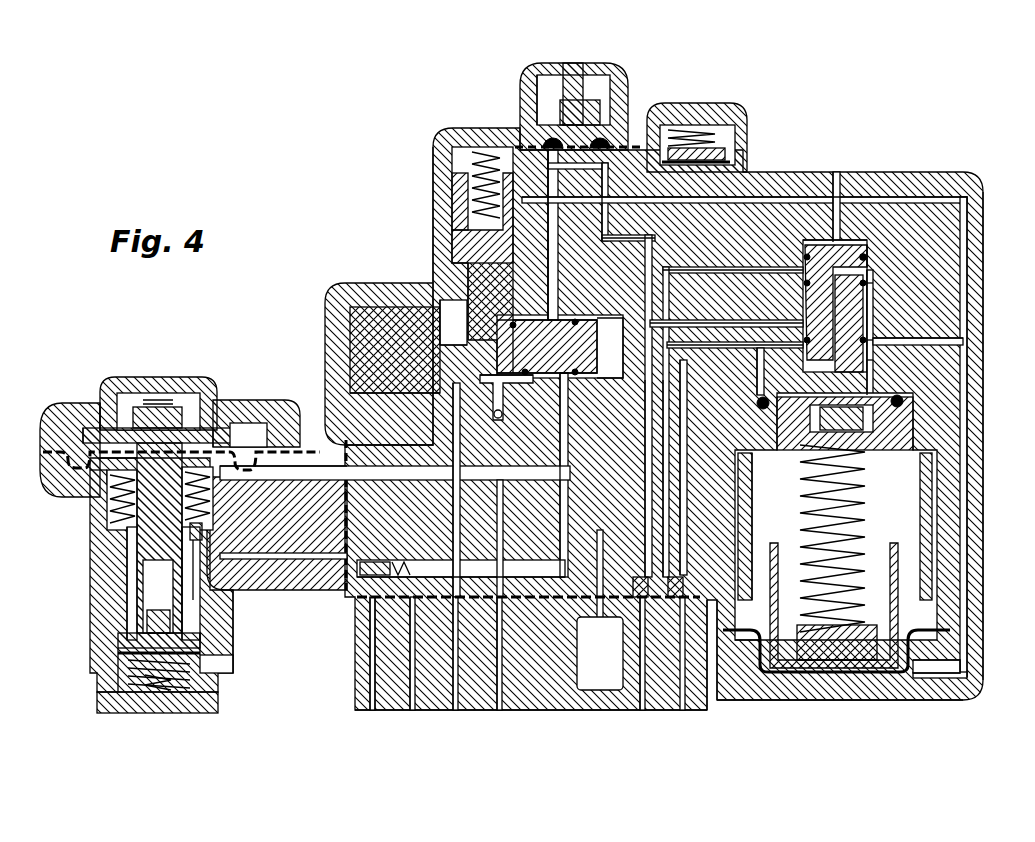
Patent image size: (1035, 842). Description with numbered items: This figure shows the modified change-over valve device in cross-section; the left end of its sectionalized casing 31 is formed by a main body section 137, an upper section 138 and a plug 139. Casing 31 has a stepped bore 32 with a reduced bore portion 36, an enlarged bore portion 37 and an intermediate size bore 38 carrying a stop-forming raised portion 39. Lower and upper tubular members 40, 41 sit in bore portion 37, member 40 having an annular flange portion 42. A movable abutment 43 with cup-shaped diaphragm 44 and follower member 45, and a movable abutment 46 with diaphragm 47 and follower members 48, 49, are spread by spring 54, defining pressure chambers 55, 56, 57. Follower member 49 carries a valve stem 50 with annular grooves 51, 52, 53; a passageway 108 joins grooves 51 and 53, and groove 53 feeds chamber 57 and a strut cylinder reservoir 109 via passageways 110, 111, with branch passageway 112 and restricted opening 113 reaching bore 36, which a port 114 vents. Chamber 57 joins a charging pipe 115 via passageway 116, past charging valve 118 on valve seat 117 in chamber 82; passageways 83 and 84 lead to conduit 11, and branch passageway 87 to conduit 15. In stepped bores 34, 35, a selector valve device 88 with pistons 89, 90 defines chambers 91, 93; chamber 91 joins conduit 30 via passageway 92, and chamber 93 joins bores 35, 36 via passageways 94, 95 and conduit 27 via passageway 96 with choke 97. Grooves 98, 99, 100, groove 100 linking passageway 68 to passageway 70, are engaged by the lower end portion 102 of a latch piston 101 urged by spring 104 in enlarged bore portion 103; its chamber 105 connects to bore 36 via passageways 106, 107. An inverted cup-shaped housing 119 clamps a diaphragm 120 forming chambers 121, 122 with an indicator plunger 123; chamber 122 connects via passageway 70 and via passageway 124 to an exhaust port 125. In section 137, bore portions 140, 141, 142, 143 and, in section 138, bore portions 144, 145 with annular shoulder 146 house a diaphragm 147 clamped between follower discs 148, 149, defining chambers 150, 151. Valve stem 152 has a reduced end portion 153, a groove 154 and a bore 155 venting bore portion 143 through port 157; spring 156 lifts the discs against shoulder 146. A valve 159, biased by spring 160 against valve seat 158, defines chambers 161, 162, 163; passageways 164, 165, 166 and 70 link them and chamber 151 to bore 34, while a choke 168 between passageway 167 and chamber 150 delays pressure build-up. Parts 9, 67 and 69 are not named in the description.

The base 9 is at (497, 712).
The conduit 11 is at (370, 712).
The conduit 15 is at (415, 712).
The conduit 27 is at (640, 712).
The conduit 30 is at (455, 712).
The sectionalized casing 31 is at (895, 180).
The stepped bore 32 is at (947, 625).
The stepped bore 34 is at (573, 323).
The stepped bore 35 is at (477, 277).
The reduced bore portion 36 is at (863, 303).
The enlarged bore portion 37 is at (930, 507).
The intermediate size bore 38 is at (753, 673).
The raised portion 39 is at (780, 680).
The lower tubular member 40 is at (750, 492).
The upper tubular member 41 is at (750, 437).
The annular flange portion 42 is at (760, 460).
The movable abutment 43 is at (908, 582).
The resilient cup-shaped diaphragm 44 is at (847, 677).
The cylindrical follower member 45 is at (893, 663).
The movable abutment 46 is at (917, 363).
The resilient diaphragm 47 is at (860, 383).
The follower member 48 is at (900, 388).
The follower member 49 is at (870, 363).
The valve stem 50 is at (822, 264).
The peripheral annular groove 51 is at (867, 253).
The peripheral annular groove 52 is at (807, 283).
The peripheral annular groove 53 is at (867, 340).
The spring 54 is at (857, 493).
The pressure chamber 55 is at (913, 660).
The pressure chamber 56 is at (875, 511).
The upper pressure chamber 57 is at (760, 390).
The passage 67 is at (347, 466).
The passageway 68 is at (570, 407).
The passage 69 is at (497, 697).
The passageway 70 is at (547, 152).
The chamber 82 is at (727, 133).
The passageway 83 is at (607, 170).
The passageway 84 is at (370, 697).
The branch passageway 87 is at (357, 562).
The selector valve device 88 is at (455, 314).
The piston 89 is at (340, 292).
The piston 90 is at (587, 367).
The chamber 91 is at (355, 318).
The passageway 92 is at (453, 483).
The chamber 93 is at (603, 328).
The passageway 94 is at (622, 240).
The passageway 95 is at (753, 320).
The passageway 96 is at (640, 427).
The choke 97 is at (647, 580).
The peripheral annular groove 98 is at (400, 413).
The peripheral annular groove 99 is at (457, 415).
The peripheral annular groove 100 is at (547, 323).
The latch piston 101 is at (457, 230).
The lower end portion 102 is at (540, 323).
The upper enlarged bore portion 103 is at (455, 170).
The spring 104 is at (470, 182).
The chamber 105 is at (473, 257).
The passageway 106 is at (787, 198).
The passageway 107 is at (867, 267).
The passageway 108 is at (840, 290).
The strut cylinder reservoir 109 is at (597, 680).
The passageway 110 is at (743, 343).
The passageway 111 is at (657, 447).
The branch passageway 112 is at (747, 272).
The restricted opening 113 is at (803, 247).
The port 114 is at (840, 188).
The charging pipe 115 is at (690, 712).
The passageway 116 is at (693, 467).
The annular valve seat 117 is at (707, 163).
The supply reservoir charging valve 118 is at (713, 145).
The inverted cup-shaped housing 119 is at (527, 77).
The resilient diaphragm 120 is at (597, 128).
The upper chamber 121 is at (540, 102).
The lower chamber 122 is at (540, 132).
The indicator plunger 123 is at (583, 88).
The passageway 124 is at (493, 402).
The exhaust port 125 is at (487, 420).
The main body section 137 is at (97, 566).
The upper section 138 is at (63, 412).
The plug 139 is at (218, 700).
The enlarged upper bore portion 140 is at (62, 465).
The lower reduced bore portion 141 is at (205, 662).
The intermediate bore portion 142 is at (107, 482).
The intermediate bore portion 143 is at (142, 598).
The lower bore portion 144 is at (67, 428).
The upper bore portion 145 is at (113, 383).
The annular shoulder 146 is at (110, 427).
The resilient diaphragm 147 is at (67, 447).
The upper follower disc 148 is at (193, 430).
The lower follower disc 149 is at (210, 440).
The lower chamber 150 is at (80, 477).
The upper chamber 151 is at (245, 440).
The valve stem 152 is at (147, 503).
The reduced end portion 153 is at (150, 615).
The peripheral annular groove 154 is at (133, 540).
The bore 155 is at (160, 572).
The spring 156 is at (100, 482).
The port 157 is at (135, 552).
The annular valve seat 158 is at (120, 658).
The valve 159 is at (135, 665).
The spring 160 is at (157, 694).
The lower chamber 161 is at (113, 680).
The outer annular chamber 162 is at (203, 645).
The chamber 163 is at (123, 635).
The passageway 164 is at (227, 632).
The passageway 165 is at (290, 470).
The passageway 166 is at (273, 440).
The passageway 167 is at (197, 593).
The choke 168 is at (200, 530).